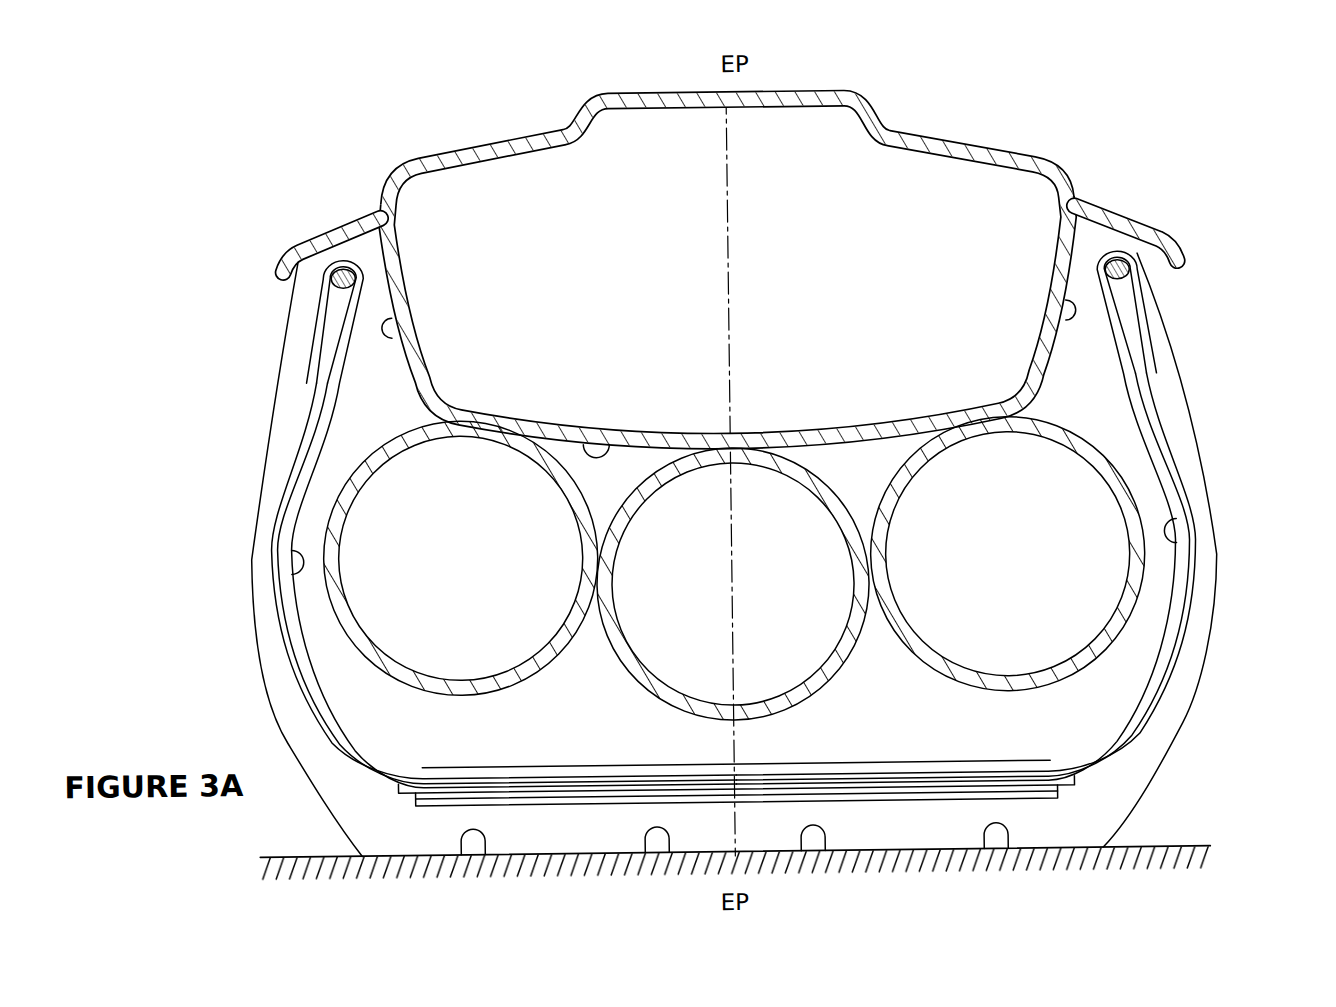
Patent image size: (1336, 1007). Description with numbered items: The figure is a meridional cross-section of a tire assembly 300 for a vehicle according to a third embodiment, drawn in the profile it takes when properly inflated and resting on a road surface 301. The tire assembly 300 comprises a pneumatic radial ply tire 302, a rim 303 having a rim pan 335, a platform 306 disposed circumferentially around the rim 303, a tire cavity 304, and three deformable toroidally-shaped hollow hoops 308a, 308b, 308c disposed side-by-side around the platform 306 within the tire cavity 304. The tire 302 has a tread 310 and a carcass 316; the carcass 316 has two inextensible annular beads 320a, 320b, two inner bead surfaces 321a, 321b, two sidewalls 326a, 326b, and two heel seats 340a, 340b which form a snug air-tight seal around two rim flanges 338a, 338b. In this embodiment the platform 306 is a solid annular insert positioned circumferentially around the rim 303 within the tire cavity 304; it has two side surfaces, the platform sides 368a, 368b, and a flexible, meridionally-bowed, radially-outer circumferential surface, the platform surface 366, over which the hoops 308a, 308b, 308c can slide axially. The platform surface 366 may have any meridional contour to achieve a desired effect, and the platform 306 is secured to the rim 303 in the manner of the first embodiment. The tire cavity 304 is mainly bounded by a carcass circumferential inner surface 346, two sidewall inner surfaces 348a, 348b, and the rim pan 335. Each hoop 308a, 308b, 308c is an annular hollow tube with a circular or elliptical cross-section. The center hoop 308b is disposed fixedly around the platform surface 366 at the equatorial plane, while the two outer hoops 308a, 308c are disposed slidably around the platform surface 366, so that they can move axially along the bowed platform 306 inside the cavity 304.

The tire assembly 300 is at (1145, 109).
The road surface 301 is at (1181, 851).
The pneumatic radial ply tire 302 is at (1239, 434).
The rim 303 is at (1042, 134).
The tire cavity 304 is at (1149, 622).
The platform 306 is at (1056, 394).
The outer hoop 308a is at (494, 679).
The center hoop 308b is at (763, 708).
The outer hoop 308c is at (1030, 679).
The tread 310 is at (880, 850).
The carcass 316 is at (529, 764).
The annular bead 320a is at (335, 279).
The annular bead 320b is at (1132, 261).
The inner bead surface 321a is at (385, 261).
The inner bead surface 321b is at (1069, 257).
The sidewall 326a is at (250, 622).
The sidewall 326b is at (1212, 596).
The rim pan 335 is at (797, 113).
The rim flange 338a is at (286, 275).
The rim flange 338b is at (1127, 231).
The heel seat 340a is at (339, 217).
The heel seat 340b is at (1165, 229).
The carcass circumferential inner surface 346 is at (657, 765).
The sidewall inner surface 348a is at (279, 546).
The sidewall inner surface 348b is at (1166, 523).
The platform surface 366 is at (612, 454).
The platform side 368a is at (400, 331).
The platform side 368b is at (1063, 308).